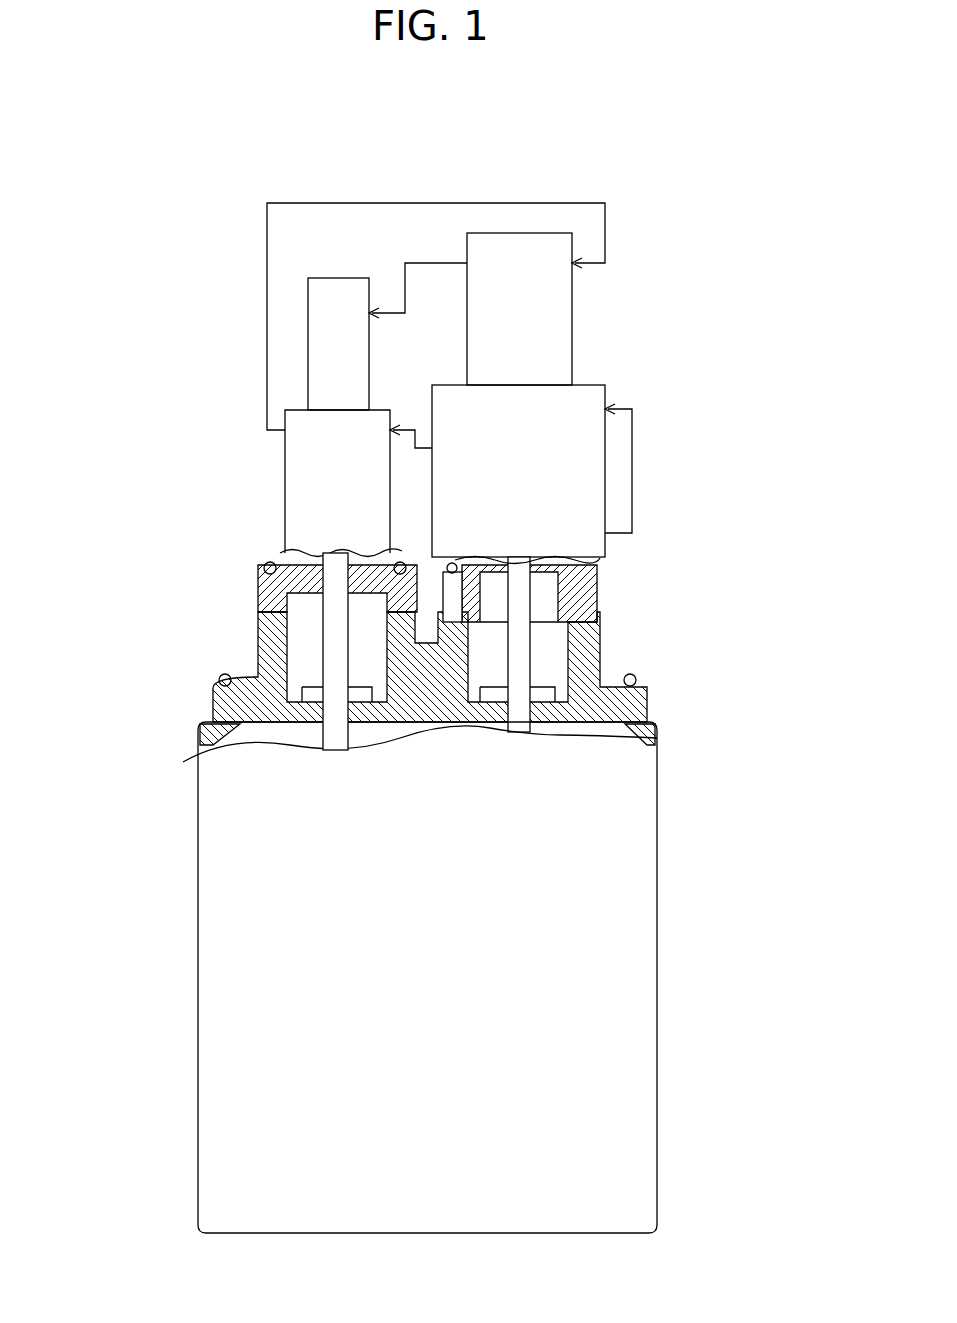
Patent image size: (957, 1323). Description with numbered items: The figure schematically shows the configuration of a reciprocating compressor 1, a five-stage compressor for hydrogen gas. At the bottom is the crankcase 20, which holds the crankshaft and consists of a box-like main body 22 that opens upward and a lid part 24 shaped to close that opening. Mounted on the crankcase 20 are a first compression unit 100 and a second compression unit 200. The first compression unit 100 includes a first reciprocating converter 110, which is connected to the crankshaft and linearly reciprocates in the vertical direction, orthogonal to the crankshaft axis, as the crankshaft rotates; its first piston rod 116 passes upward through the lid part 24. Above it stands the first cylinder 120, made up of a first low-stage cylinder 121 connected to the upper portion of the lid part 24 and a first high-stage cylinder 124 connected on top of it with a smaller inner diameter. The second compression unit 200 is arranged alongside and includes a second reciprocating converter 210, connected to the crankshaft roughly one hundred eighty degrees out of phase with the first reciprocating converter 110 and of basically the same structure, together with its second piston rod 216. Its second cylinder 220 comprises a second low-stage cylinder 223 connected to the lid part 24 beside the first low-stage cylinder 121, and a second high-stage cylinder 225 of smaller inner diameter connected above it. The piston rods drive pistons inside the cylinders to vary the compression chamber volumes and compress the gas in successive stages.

The reciprocating compressor 1 is at (817, 98).
The first compression unit 100 is at (655, 177).
The second compression unit 200 is at (247, 235).
The second cylinder 220 is at (176, 272).
The second high-stage cylinder 225 is at (308, 293).
The second low-stage cylinder 223 is at (285, 442).
The first cylinder 120 is at (720, 290).
The first high-stage cylinder 124 is at (572, 292).
The first low-stage cylinder 121 is at (605, 478).
The crankcase 20 is at (748, 620).
The lid part 24 is at (598, 643).
The main body 22 is at (683, 755).
The first piston rod 116 is at (517, 715).
The first reciprocating converter 110 is at (420, 979).
The second piston rod 216 is at (332, 680).
The second reciprocating converter 210 is at (335, 651).